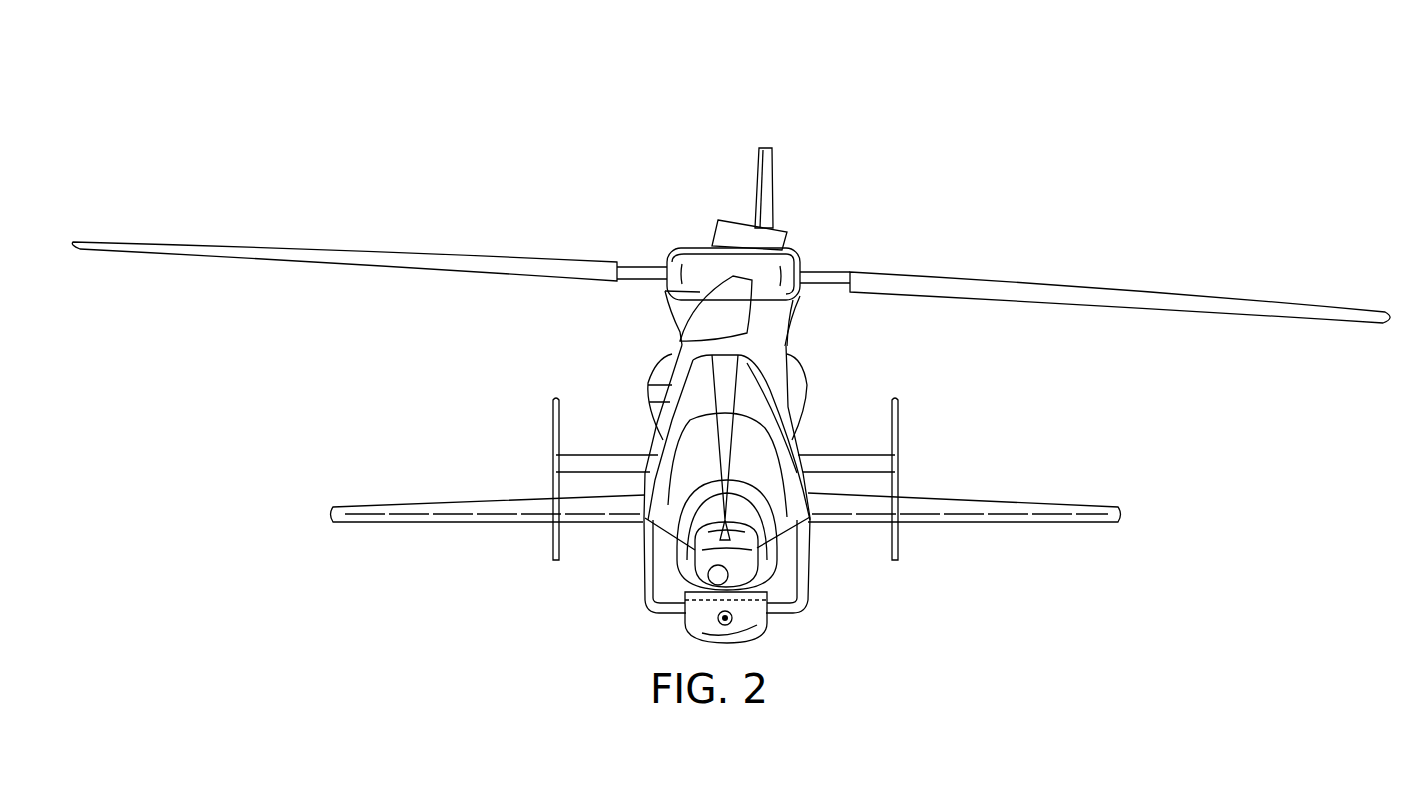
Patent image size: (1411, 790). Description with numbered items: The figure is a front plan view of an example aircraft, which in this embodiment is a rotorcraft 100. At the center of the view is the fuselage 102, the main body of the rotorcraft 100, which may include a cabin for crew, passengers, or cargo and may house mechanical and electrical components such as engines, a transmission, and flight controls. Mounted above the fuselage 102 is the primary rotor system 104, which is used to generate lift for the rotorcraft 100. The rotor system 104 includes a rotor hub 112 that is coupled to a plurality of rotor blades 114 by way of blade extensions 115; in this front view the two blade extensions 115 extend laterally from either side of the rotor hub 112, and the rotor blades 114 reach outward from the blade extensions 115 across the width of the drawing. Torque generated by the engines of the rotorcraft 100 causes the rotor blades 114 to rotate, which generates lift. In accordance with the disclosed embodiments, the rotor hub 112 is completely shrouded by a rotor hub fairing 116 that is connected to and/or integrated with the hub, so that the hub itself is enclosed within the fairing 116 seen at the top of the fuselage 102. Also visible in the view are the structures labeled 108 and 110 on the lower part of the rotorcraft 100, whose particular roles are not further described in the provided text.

The rotorcraft 100 is at (352, 94).
The fuselage 102 is at (655, 378).
The primary rotor system 104 is at (806, 160).
The nose section 108 is at (625, 578).
The wing 110 is at (437, 503).
The rotor hub 112 is at (810, 255).
The rotor blades 114 is at (363, 253).
The blade extensions 115 is at (643, 265).
The rotor hub fairing 116 is at (690, 248).